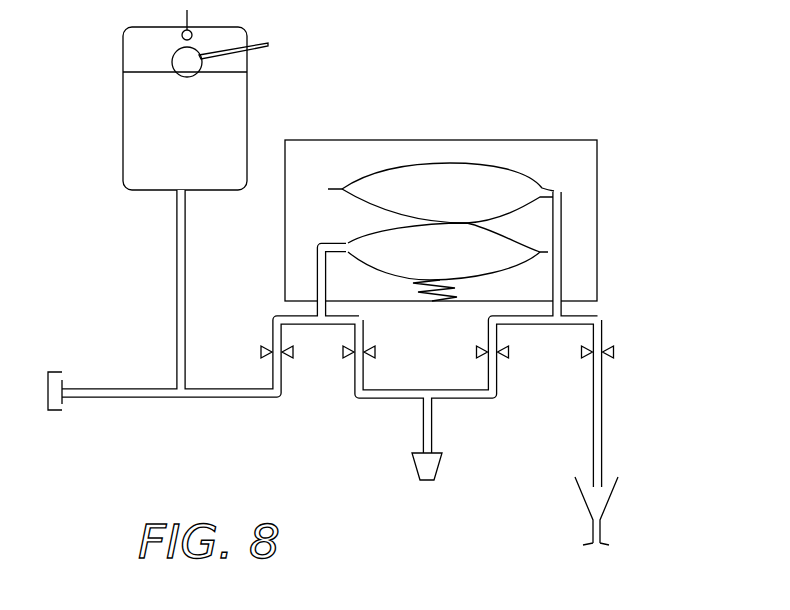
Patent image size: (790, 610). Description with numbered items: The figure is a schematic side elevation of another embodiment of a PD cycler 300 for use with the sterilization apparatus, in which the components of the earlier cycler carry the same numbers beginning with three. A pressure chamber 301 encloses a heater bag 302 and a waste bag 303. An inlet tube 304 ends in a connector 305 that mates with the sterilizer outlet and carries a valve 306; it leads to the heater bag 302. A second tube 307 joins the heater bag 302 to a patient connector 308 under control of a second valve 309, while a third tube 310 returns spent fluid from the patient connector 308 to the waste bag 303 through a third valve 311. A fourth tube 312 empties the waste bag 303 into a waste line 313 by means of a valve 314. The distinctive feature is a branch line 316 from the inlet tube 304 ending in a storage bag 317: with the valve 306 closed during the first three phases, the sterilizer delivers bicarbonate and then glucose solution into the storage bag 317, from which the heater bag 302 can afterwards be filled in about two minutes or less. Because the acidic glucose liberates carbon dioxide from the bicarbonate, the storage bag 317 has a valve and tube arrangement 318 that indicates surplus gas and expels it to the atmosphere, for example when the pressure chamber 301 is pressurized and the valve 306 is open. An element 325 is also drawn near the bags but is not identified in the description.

The PD cycler 300 is at (549, 118).
The pressure chamber 301 is at (378, 140).
The heater bag 302 is at (513, 236).
The waste bag 303 is at (483, 163).
The inlet tube 304 is at (208, 398).
The connector 305 is at (62, 410).
The valve 306 is at (263, 351).
The second tube 307 is at (395, 398).
The patient connector 308 is at (441, 465).
The second valve 309 is at (376, 352).
The third tube 310 is at (452, 398).
The third valve 311 is at (507, 356).
The fourth tube 312 is at (602, 418).
The waste line 313 is at (618, 480).
The valve 314 is at (613, 356).
The branch line 316 is at (177, 251).
The storage bag 317 is at (123, 125).
The valve and tube arrangement 318 is at (174, 62).
The spring 325 is at (451, 302).